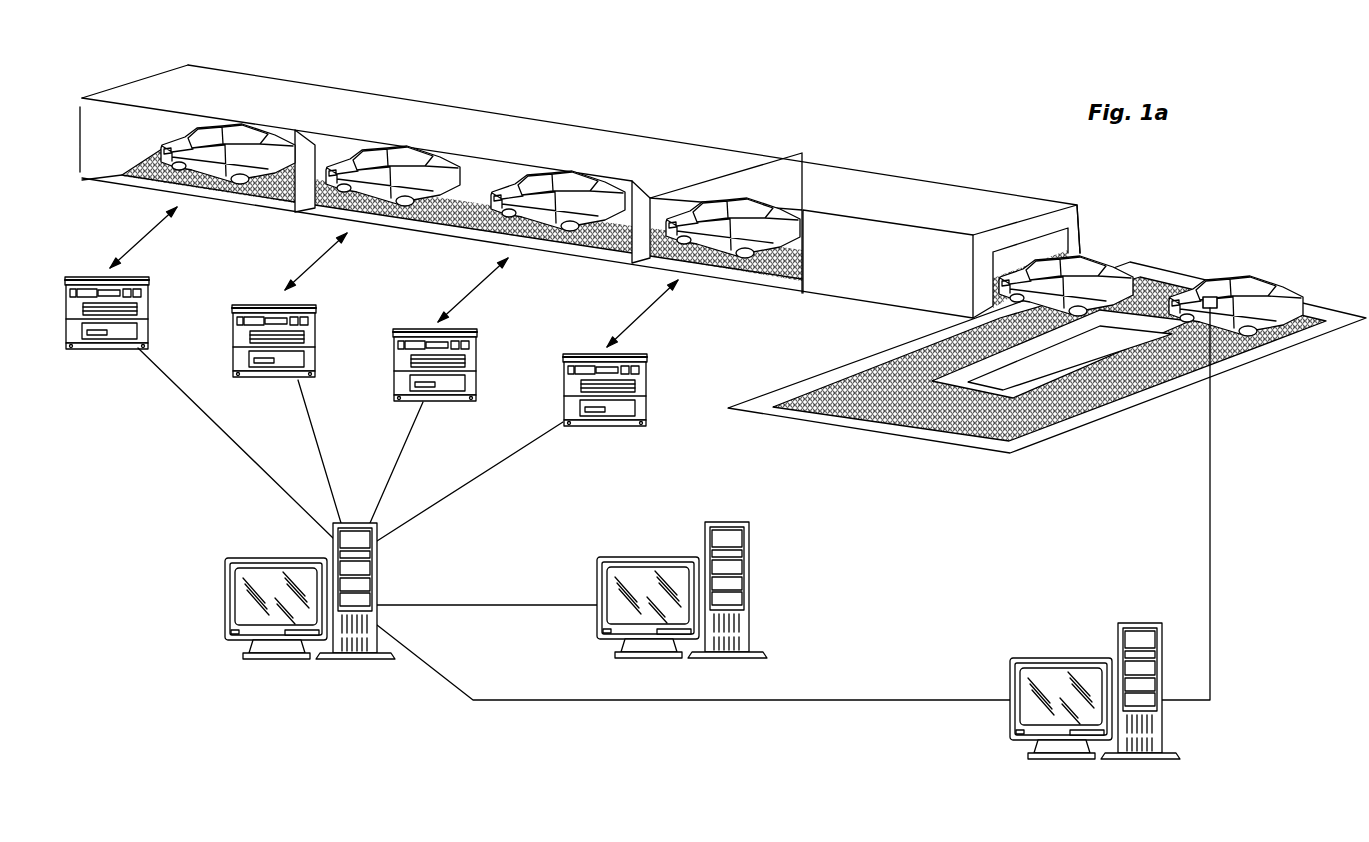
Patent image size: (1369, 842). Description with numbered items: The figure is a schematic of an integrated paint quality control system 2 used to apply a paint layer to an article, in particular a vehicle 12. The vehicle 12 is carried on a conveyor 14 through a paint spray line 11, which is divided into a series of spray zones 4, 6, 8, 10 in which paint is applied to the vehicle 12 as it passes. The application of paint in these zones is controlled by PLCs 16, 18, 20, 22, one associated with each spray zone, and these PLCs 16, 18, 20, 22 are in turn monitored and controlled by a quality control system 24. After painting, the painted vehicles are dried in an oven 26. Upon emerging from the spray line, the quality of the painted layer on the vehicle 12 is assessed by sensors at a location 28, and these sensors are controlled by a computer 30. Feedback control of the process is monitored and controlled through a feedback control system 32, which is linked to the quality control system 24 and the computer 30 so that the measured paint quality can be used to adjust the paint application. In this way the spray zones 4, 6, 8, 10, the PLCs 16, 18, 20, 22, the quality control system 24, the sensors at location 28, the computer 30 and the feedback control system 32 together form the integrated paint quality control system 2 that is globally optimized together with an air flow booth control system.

The integrated paint quality control system 2 is at (933, 115).
The spray zone 4 is at (138, 113).
The spray zone 6 is at (360, 148).
The spray zone 8 is at (518, 168).
The spray zone 10 is at (697, 200).
The paint spray line 11 is at (550, 118).
The vehicle 12 is at (187, 135).
The conveyor 14 is at (158, 178).
The PLC 16 is at (110, 348).
The PLC 18 is at (305, 381).
The PLC 20 is at (443, 403).
The PLC 22 is at (615, 428).
The quality control system 24 is at (225, 572).
The oven 26 is at (875, 195).
The sensor location 28 is at (1265, 315).
The computer 30 is at (1063, 658).
The feedback control system 32 is at (642, 558).